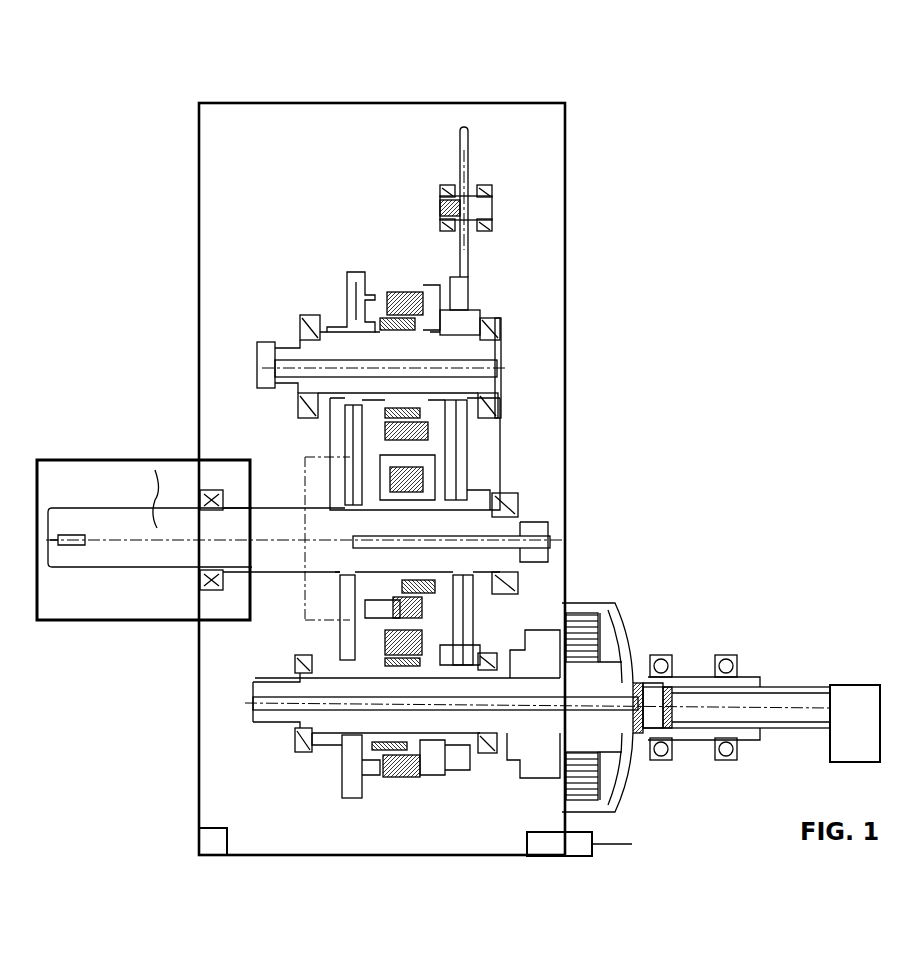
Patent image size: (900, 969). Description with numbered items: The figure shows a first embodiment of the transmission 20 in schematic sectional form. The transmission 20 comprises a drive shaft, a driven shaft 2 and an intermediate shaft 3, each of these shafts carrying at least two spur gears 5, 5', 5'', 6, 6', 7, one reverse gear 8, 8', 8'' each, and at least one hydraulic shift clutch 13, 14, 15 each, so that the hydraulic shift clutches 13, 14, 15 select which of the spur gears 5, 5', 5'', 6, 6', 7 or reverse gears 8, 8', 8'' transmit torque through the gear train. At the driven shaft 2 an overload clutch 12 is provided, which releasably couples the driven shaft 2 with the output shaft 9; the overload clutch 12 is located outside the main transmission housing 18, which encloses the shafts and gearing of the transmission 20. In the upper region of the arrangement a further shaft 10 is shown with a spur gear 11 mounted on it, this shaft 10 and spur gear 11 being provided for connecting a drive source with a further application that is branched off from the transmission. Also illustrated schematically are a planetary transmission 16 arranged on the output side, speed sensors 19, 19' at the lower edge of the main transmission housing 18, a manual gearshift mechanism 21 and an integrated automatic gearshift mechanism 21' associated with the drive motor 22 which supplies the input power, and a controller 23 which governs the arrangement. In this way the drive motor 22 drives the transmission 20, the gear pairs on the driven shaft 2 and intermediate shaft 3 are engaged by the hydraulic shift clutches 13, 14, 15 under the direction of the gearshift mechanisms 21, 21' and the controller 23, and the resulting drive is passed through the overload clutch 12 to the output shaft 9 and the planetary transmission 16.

The driven shaft 2 is at (275, 688).
The intermediate shaft 3 is at (310, 355).
The spur gear 5 is at (335, 285).
The spur gear 5' is at (484, 458).
The spur gear 5'' is at (329, 617).
The spur gear 6 is at (349, 476).
The spur gear 6' is at (407, 625).
The spur gear 7 is at (460, 297).
The reverse gear 8 is at (410, 277).
The reverse gear 8' is at (320, 455).
The reverse gear 8'' is at (490, 784).
The output shaft 9 is at (790, 700).
The shaft 10 is at (495, 200).
The spur gear 11 is at (461, 153).
The overload clutch 12 is at (590, 617).
The hydraulic shift clutch 13 is at (402, 588).
The hydraulic shift clutch 14 is at (400, 765).
The hydraulic shift clutch 15 is at (450, 425).
The planetary transmission 16 is at (856, 685).
The main transmission housing 18 is at (565, 287).
The speed sensor 19 is at (531, 841).
The speed sensor 19' is at (634, 844).
The transmission 20 is at (664, 415).
The manual gearshift mechanism 21 is at (304, 591).
The integrated automatic gearshift mechanism 21' is at (67, 540).
The drive motor 22 is at (117, 460).
The controller 23 is at (227, 828).